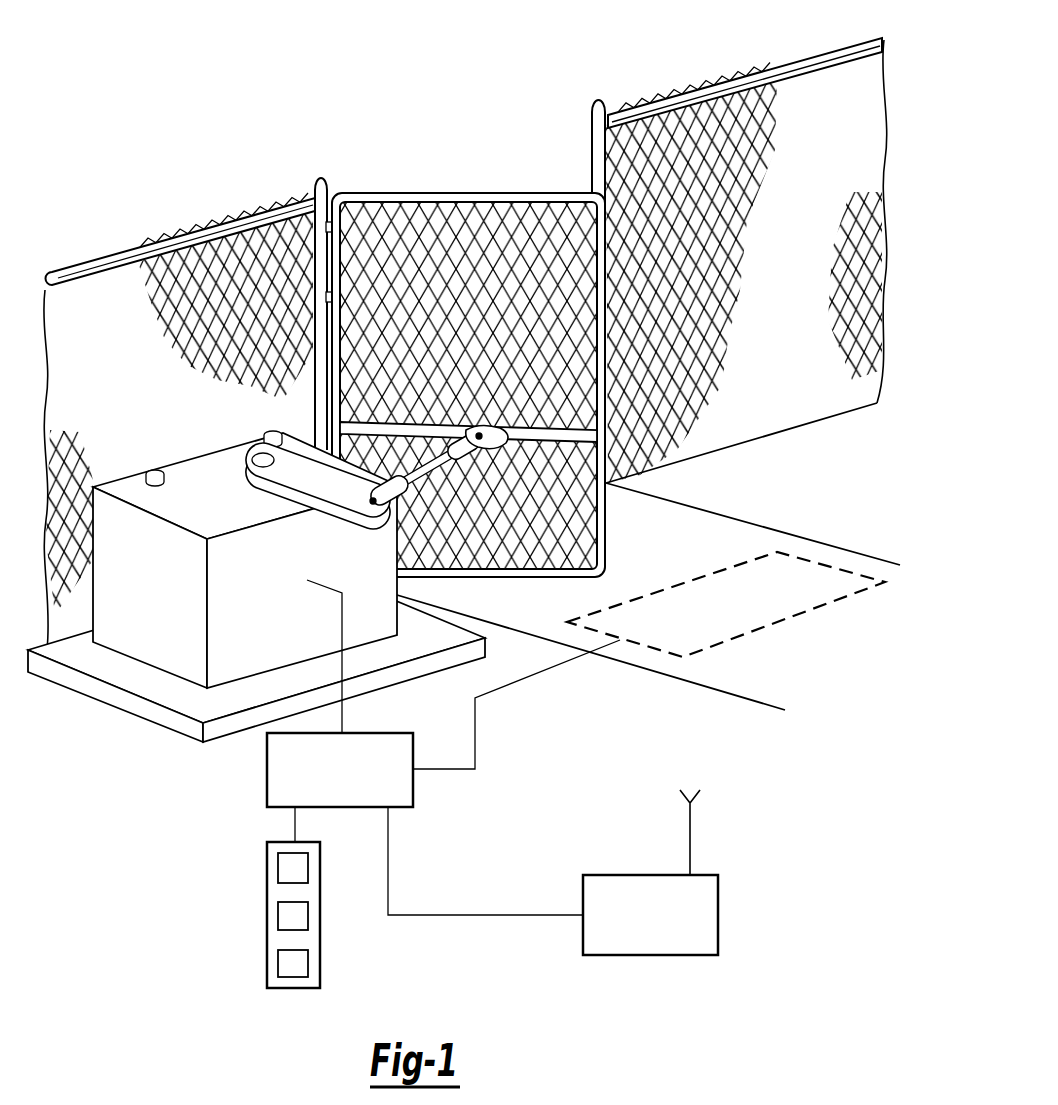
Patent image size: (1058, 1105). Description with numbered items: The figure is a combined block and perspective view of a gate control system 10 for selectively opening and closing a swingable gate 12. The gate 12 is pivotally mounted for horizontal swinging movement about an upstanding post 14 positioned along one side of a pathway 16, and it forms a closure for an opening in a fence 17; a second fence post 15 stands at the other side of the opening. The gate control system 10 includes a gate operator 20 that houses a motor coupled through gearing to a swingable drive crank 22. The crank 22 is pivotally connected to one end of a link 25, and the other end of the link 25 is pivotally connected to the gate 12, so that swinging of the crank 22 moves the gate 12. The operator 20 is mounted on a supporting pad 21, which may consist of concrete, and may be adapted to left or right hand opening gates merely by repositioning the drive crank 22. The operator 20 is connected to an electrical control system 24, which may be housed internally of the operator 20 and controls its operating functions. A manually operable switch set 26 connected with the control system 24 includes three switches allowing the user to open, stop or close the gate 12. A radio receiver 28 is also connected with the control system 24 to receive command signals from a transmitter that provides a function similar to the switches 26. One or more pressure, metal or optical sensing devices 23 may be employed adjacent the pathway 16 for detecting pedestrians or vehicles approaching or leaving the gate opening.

The gate control system 10 is at (464, 504).
The swingable gate 12 is at (467, 192).
The upstanding post 14 is at (333, 190).
The fence post 15 is at (592, 120).
The pathway 16 is at (668, 657).
The fence 17 is at (212, 258).
The gate operator 20 is at (166, 612).
The supporting pad 21 is at (140, 683).
The drive crank 22 is at (317, 483).
The sensing devices 23 is at (760, 618).
The electrical control system 24 is at (267, 784).
The link 25 is at (392, 507).
The manually operable switch set 26 is at (267, 947).
The radio receiver 28 is at (718, 915).